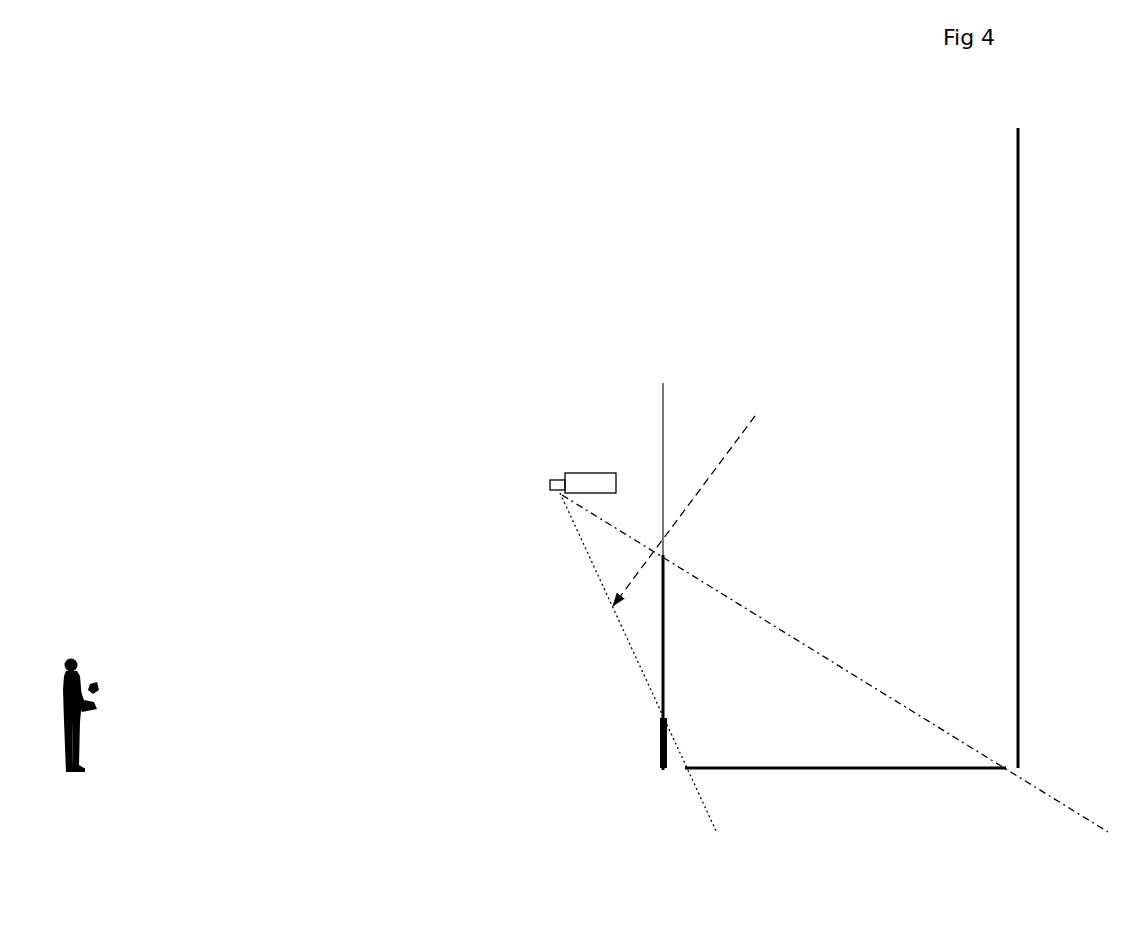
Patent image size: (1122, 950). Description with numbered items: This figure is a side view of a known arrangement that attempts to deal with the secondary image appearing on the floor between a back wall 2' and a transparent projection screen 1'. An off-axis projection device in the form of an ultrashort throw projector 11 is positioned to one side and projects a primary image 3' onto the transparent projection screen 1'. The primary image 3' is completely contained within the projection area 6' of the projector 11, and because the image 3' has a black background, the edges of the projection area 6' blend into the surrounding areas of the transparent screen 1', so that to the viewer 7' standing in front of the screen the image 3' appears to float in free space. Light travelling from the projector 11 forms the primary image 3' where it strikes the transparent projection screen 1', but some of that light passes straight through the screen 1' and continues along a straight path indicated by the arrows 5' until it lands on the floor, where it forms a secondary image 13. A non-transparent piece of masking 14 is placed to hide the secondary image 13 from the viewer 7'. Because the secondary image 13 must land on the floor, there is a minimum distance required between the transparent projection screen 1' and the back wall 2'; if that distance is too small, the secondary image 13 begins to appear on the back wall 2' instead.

The transparent projection screen 1' is at (594, 436).
The back wall 2' is at (953, 440).
The primary image 3' is at (715, 662).
The arrows 5' is at (764, 675).
The projection area 6' is at (697, 498).
The viewer 7' is at (109, 673).
The ultrashort throw projector 11 is at (563, 472).
The secondary image 13 is at (790, 771).
The masking 14 is at (659, 743).